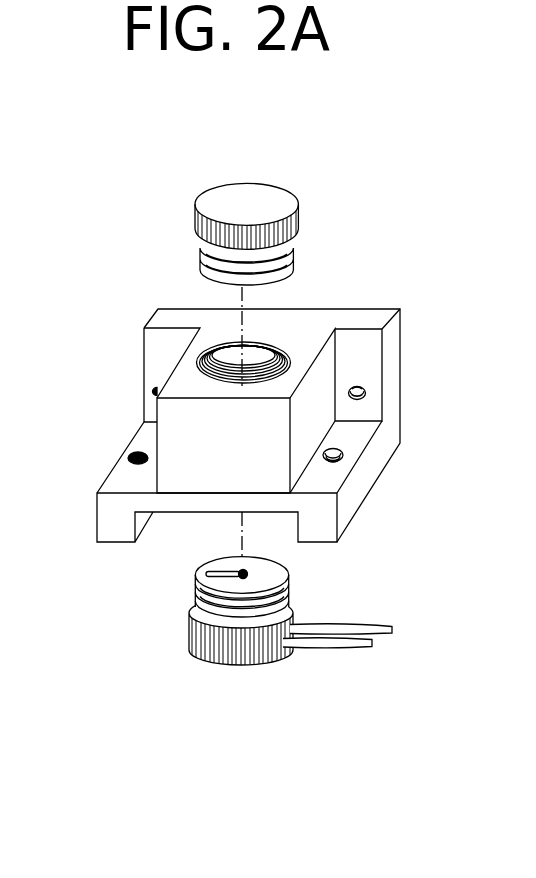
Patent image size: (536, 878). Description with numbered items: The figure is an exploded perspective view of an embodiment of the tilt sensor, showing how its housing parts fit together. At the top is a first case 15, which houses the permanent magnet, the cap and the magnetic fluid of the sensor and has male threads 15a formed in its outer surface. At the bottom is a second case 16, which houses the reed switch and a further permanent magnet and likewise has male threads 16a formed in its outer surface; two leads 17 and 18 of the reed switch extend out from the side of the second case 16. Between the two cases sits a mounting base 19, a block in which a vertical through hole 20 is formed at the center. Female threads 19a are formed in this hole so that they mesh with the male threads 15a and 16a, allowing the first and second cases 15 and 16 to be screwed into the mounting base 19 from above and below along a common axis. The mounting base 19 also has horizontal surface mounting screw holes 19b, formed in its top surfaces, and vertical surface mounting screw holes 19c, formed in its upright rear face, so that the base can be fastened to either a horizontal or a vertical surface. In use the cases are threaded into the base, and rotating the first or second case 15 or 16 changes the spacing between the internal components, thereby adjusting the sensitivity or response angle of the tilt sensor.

The first case 15 is at (287, 207).
The male threads 15a is at (281, 258).
The second case 16 is at (220, 658).
The male threads 16a is at (197, 590).
The lead 17 is at (351, 625).
The lead 18 is at (327, 650).
The mounting base 19 is at (412, 348).
The female threads 19a is at (268, 352).
The horizontal surface mounting screw holes 19b is at (343, 452).
The vertical surface mounting screw holes 19c is at (365, 397).
The vertical through hole 20 is at (222, 367).